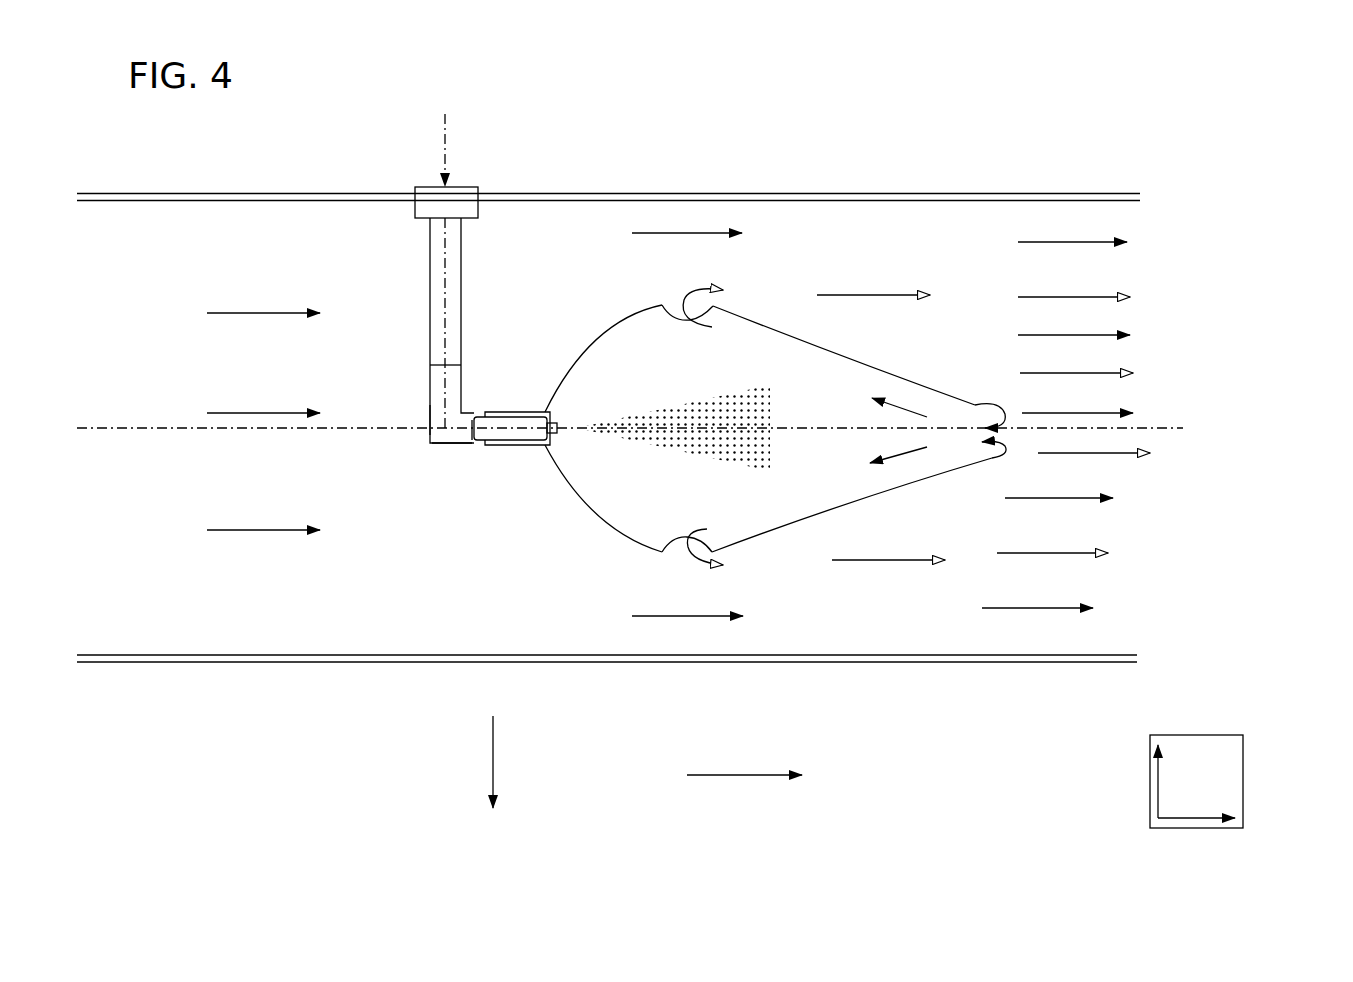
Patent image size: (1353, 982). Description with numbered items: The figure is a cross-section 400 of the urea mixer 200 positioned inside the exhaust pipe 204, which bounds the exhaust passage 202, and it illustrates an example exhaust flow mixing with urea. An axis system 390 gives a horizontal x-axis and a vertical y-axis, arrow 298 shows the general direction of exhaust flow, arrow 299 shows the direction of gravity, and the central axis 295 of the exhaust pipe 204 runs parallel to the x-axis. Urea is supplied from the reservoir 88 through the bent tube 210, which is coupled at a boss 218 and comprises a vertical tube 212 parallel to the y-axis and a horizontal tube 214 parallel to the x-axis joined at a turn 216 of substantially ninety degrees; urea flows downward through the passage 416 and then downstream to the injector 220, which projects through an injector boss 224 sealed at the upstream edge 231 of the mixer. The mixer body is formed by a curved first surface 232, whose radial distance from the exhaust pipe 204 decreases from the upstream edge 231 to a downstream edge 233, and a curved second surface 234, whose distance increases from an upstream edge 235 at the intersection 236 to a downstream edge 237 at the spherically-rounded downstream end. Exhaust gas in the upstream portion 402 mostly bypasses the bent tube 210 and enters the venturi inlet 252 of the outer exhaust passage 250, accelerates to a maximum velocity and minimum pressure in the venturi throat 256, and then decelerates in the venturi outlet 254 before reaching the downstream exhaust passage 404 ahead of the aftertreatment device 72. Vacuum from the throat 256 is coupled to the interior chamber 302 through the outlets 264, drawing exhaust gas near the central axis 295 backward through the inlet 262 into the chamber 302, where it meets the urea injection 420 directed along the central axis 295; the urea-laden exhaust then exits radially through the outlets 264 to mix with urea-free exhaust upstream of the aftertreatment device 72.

The cross-section 400 is at (243, 130).
The exhaust pipe 204 is at (707, 193).
The exhaust passage 202 is at (178, 623).
The urea mixer 200 is at (872, 237).
The central axis 295 is at (1172, 432).
The reservoir 88 is at (447, 141).
The bent tube 210 is at (397, 297).
The boss 218 is at (446, 202).
The vertical tube 212 is at (462, 326).
The passage 416 is at (445, 354).
The turn 216 is at (431, 420).
The horizontal tube 214 is at (447, 445).
The injector 220 is at (472, 443).
The injector boss 224 is at (509, 412).
The upstream edge 231 is at (535, 402).
The interior chamber 302 is at (673, 435).
The first surface 232 is at (590, 348).
The downstream edge 233 is at (657, 301).
The upstream edge 235 is at (728, 300).
The intersection 236 is at (697, 279).
The outlets 264 is at (673, 331).
The urea injection 420 is at (727, 371).
The second surface 234 is at (871, 365).
The inlet 262 is at (996, 413).
The downstream edge 237 is at (994, 461).
The outer exhaust passage 250 is at (460, 592).
The upstream portion 402 is at (257, 421).
The venturi inlet 252 is at (593, 597).
The venturi throat 256 is at (687, 631).
The venturi outlet 254 is at (881, 460).
The downstream exhaust passage 404 is at (1066, 425).
The aftertreatment device 72 is at (1239, 380).
The arrow 299 is at (494, 748).
The arrow 298 is at (710, 775).
The axis system 390 is at (1210, 735).